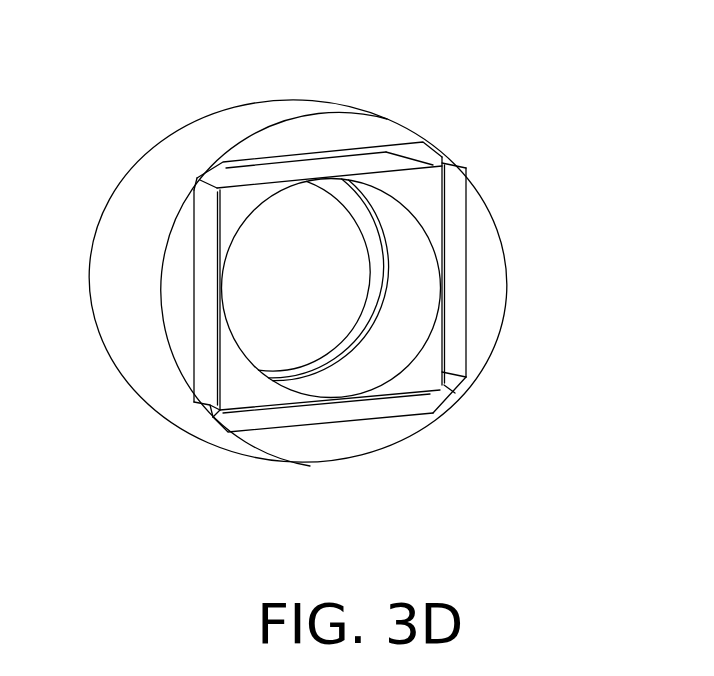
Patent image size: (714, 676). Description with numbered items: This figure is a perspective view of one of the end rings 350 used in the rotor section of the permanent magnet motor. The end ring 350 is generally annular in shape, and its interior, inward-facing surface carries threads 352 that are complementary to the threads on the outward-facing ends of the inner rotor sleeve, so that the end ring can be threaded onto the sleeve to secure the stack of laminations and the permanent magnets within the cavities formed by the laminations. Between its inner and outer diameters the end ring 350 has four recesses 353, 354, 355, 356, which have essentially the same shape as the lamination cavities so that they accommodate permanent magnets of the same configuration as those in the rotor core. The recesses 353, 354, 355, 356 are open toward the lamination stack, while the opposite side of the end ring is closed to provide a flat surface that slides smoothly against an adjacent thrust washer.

The end ring 350 is at (492, 132).
The threads 352 is at (408, 262).
The recess 353 is at (330, 162).
The recess 354 is at (200, 217).
The recess 355 is at (330, 416).
The recess 356 is at (455, 270).